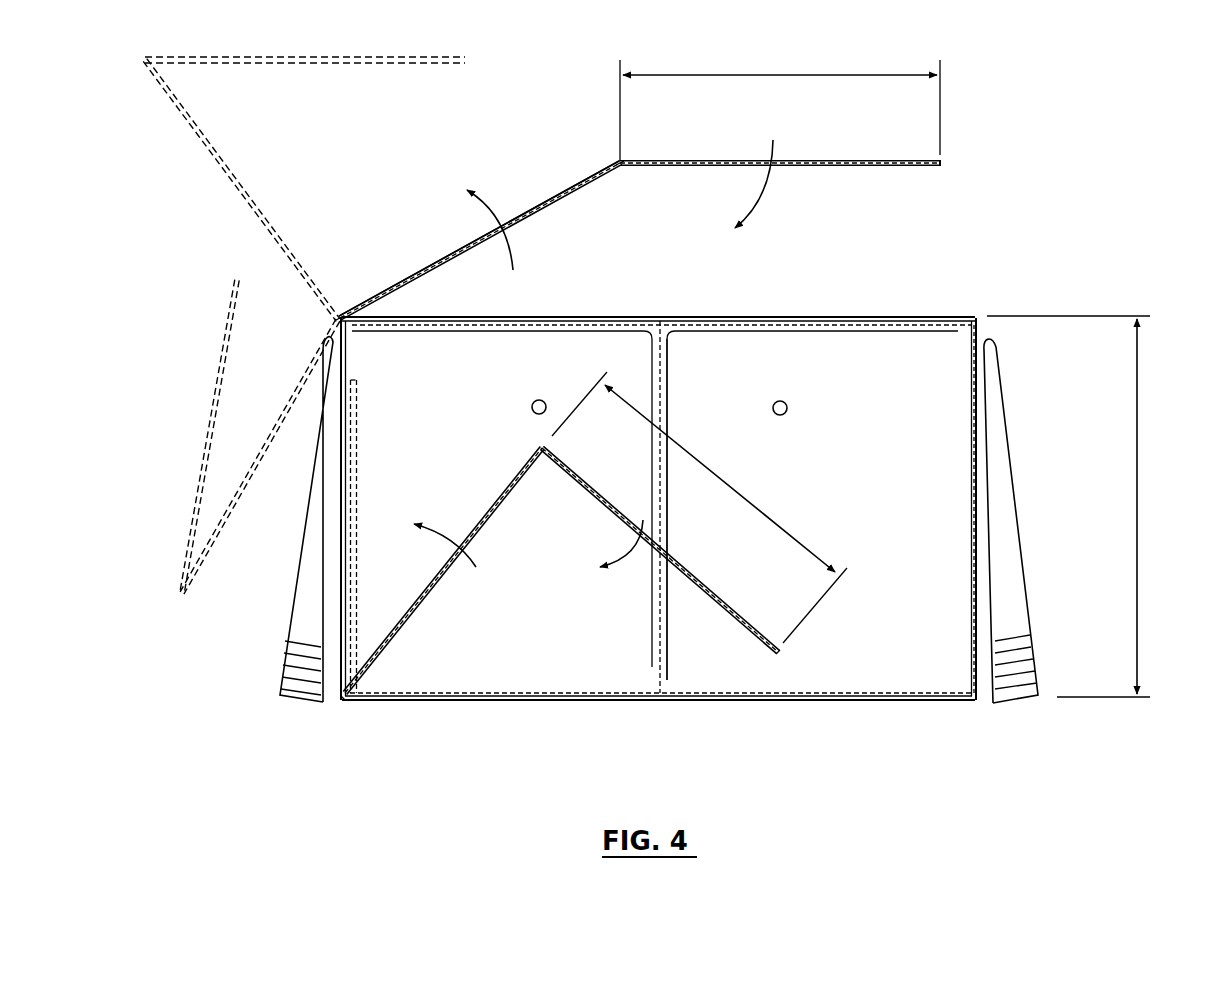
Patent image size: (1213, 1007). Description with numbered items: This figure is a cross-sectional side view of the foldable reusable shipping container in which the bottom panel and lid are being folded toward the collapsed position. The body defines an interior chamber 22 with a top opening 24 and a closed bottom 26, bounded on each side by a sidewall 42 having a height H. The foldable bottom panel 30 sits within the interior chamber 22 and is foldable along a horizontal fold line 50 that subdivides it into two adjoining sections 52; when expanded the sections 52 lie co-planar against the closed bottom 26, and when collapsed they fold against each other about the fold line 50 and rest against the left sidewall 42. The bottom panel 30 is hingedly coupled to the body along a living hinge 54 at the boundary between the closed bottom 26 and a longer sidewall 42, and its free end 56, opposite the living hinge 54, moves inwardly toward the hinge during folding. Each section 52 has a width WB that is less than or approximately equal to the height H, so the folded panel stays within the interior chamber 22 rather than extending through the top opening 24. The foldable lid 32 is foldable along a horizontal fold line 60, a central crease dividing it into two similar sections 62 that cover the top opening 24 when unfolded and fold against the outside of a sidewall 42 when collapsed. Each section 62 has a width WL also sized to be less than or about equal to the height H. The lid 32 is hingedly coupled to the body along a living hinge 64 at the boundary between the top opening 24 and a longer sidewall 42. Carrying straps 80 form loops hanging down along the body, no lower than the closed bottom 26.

The interior chamber 22 is at (857, 483).
The top opening 24 is at (863, 321).
The closed bottom 26 is at (712, 702).
The foldable bottom panel 30 is at (500, 498).
The foldable lid 32 is at (543, 203).
The sidewall 42 is at (341, 585).
The fold line 50 is at (542, 448).
The sections 52 is at (437, 580).
The living hinge 54 is at (341, 703).
The free end 56 is at (776, 654).
The fold line 60 is at (620, 163).
The sections 62 is at (433, 262).
The living hinge 64 is at (339, 317).
The carrying straps 80 is at (291, 663).
The height H is at (1138, 502).
The width WL is at (745, 75).
The width WB is at (736, 489).